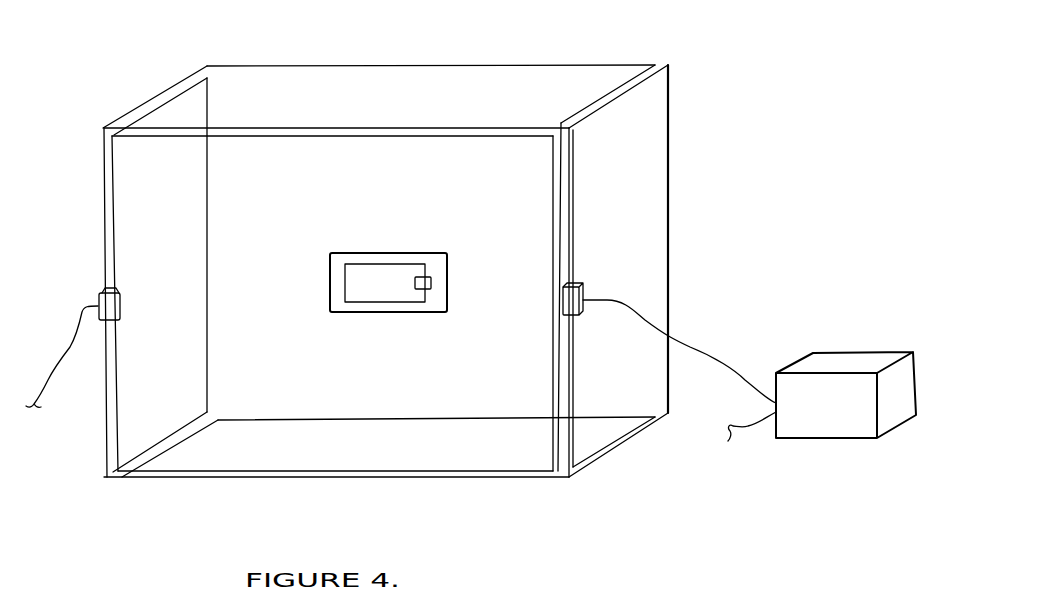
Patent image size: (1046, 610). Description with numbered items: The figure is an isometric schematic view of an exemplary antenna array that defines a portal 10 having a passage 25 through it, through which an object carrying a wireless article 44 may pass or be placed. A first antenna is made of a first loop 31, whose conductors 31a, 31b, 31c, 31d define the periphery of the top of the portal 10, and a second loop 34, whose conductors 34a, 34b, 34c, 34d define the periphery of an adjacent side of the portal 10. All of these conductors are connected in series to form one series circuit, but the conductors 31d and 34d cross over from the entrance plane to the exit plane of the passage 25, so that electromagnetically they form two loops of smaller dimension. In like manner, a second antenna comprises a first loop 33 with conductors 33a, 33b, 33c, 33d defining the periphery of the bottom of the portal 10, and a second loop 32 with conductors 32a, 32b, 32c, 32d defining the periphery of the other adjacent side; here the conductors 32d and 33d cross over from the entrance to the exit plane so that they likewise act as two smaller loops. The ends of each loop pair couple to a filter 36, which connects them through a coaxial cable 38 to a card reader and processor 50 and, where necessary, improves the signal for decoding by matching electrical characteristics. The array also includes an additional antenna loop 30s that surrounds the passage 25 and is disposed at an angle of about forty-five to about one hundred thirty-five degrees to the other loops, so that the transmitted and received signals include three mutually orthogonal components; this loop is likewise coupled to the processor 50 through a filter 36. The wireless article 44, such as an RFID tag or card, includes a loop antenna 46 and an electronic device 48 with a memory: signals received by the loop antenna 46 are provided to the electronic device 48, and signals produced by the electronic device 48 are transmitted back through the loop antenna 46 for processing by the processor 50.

The portal 10 is at (763, 95).
The passage 25 is at (500, 233).
The additional antenna loop 30s is at (322, 137).
The first loop 31 is at (247, 64).
The conductor 31a is at (360, 128).
The conductor 31b is at (598, 100).
The conductor 31c is at (360, 65).
The conductor 31d is at (168, 85).
The second loop 32 is at (669, 147).
The conductor 32a is at (574, 228).
The conductor 32b is at (613, 103).
The conductor 32c is at (670, 217).
The conductor 32d is at (628, 437).
The first loop 33 is at (504, 479).
The conductor 33a is at (197, 483).
The conductor 33b is at (188, 446).
The conductor 33c is at (405, 416).
The conductor 33d is at (598, 460).
The second loop 34 is at (211, 294).
The conductor 34a is at (107, 233).
The conductor 34b is at (182, 430).
The conductor 34c is at (205, 233).
The conductor 34d is at (142, 115).
The filter 36 is at (120, 296).
The coaxial cable 38 is at (70, 345).
The wireless article 44 is at (380, 253).
The loop antenna 46 is at (380, 302).
The electronic device 48 is at (432, 282).
The card reader and processor 50 is at (853, 353).